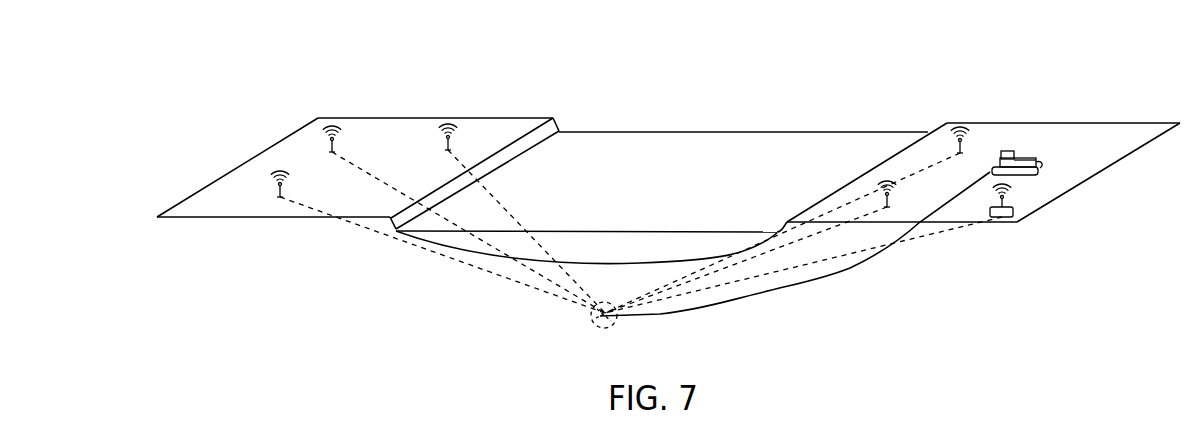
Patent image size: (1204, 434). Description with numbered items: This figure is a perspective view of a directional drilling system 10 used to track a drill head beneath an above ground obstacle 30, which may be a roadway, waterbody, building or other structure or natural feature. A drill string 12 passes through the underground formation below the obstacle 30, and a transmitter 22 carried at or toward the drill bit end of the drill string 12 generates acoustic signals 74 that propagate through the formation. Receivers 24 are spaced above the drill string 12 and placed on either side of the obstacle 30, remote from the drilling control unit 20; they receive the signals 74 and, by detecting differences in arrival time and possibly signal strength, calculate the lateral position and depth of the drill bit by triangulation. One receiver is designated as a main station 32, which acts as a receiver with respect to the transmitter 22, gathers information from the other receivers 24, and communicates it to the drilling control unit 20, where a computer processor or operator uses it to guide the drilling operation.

The system 10 is at (1006, 275).
The drill string 12 is at (833, 275).
The drilling control unit 20 is at (1038, 164).
The transmitter 22 is at (586, 321).
The receivers 24 is at (448, 143).
The obstacle 30 is at (672, 163).
The main station 32 is at (1013, 210).
The signals 74 is at (593, 307).